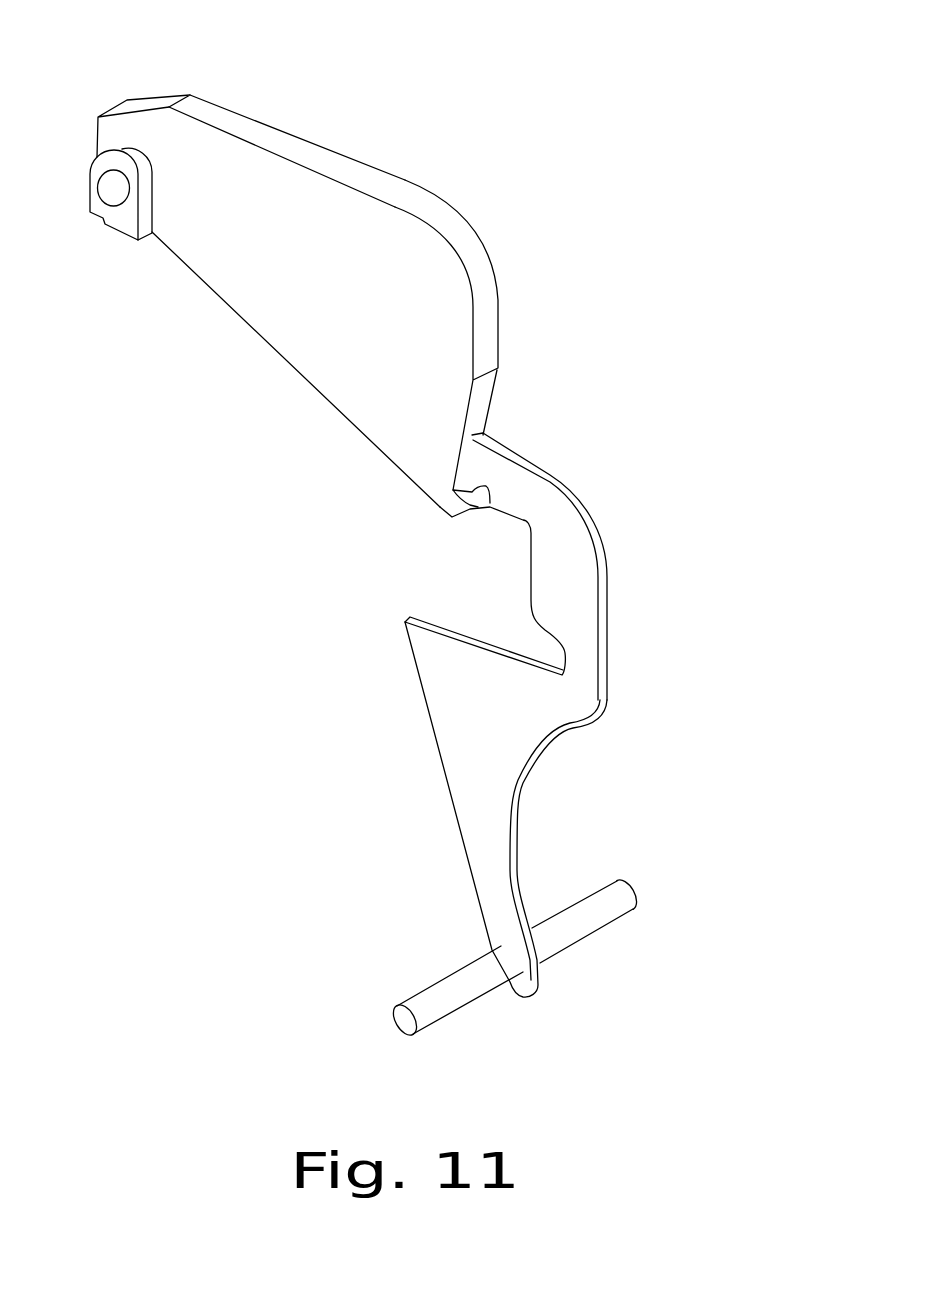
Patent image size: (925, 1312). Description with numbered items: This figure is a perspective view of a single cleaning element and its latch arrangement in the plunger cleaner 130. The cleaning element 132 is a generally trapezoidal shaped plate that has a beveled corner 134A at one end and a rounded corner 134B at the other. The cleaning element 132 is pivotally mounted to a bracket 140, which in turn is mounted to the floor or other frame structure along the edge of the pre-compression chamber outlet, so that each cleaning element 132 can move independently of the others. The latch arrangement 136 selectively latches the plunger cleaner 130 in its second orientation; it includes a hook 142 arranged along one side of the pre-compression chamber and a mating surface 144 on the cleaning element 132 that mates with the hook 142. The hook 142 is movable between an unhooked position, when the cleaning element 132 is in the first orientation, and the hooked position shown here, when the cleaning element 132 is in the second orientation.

The plunger cleaner 130 is at (332, 528).
The cleaning element 132 is at (310, 140).
The beveled corner 134A is at (157, 98).
The rounded corner 134B is at (477, 233).
The latch arrangement 136 is at (352, 536).
The bracket 140 is at (110, 236).
The hook 142 is at (563, 488).
The mating surface 144 is at (487, 507).